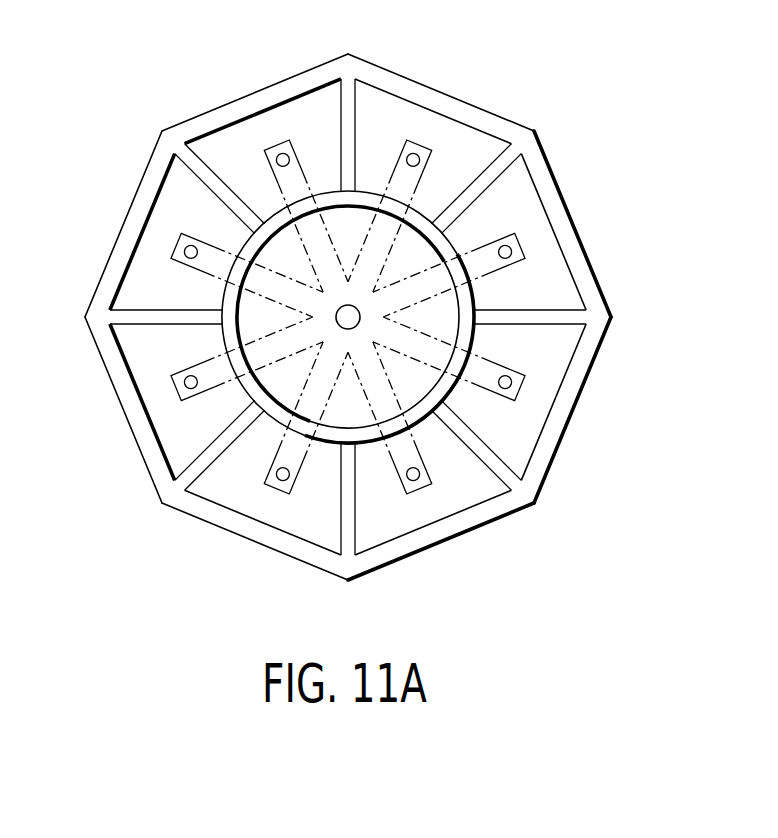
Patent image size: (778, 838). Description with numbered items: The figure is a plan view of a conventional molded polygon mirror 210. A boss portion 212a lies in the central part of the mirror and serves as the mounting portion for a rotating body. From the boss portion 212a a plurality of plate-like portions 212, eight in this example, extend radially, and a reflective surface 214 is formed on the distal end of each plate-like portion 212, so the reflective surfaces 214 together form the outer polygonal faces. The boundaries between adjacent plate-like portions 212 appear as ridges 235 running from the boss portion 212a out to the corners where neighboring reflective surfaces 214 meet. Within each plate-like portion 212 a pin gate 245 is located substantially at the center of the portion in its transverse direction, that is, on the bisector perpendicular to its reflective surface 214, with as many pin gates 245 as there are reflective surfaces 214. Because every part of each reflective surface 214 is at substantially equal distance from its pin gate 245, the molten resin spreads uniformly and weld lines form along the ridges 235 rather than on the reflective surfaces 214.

The polygon mirror 210 is at (495, 92).
The plate-like portion 212 is at (168, 427).
The boss portion 212a is at (437, 455).
The reflective surface 214 is at (130, 210).
The ridge 235 is at (497, 452).
The pin gate 245 is at (277, 487).